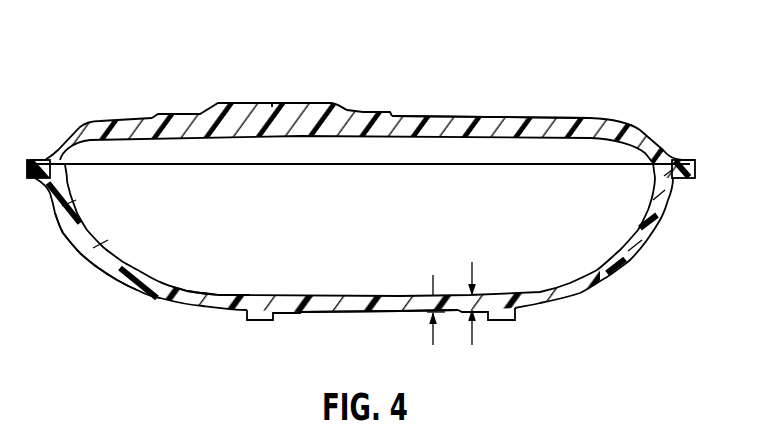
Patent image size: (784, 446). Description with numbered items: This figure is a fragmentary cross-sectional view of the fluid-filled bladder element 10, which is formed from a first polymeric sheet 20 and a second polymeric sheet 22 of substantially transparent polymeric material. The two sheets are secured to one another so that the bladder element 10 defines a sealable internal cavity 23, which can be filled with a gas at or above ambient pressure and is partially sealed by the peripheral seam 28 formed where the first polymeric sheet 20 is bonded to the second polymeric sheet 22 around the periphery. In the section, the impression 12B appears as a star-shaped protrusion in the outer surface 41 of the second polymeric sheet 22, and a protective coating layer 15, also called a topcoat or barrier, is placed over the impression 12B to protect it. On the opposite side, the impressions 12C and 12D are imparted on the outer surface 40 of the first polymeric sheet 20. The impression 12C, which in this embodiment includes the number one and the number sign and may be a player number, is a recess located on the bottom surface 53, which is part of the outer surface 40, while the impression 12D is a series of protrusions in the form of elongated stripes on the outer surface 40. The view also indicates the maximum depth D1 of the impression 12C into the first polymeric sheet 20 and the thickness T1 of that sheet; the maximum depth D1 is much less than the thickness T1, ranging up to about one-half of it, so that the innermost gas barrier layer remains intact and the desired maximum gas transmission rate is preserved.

The fluid-filled bladder element 10 is at (397, 208).
The protective coating layer 15 is at (237, 102).
The impression 12B is at (268, 102).
The outer surface of the second polymeric sheet 41 is at (412, 114).
The sealable internal cavity 23 is at (496, 192).
The second polymeric sheet 22 is at (590, 118).
The peripheral seam 28 is at (697, 164).
The first polymeric sheet 20 is at (615, 283).
The outer surface of the first polymeric sheet 40 is at (120, 293).
The bottom surface 53 is at (188, 303).
The impression 12D is at (258, 321).
The impression 12C is at (397, 312).
The thickness of the first polymeric sheet T1 is at (476, 278).
The maximum depth D1 is at (435, 330).